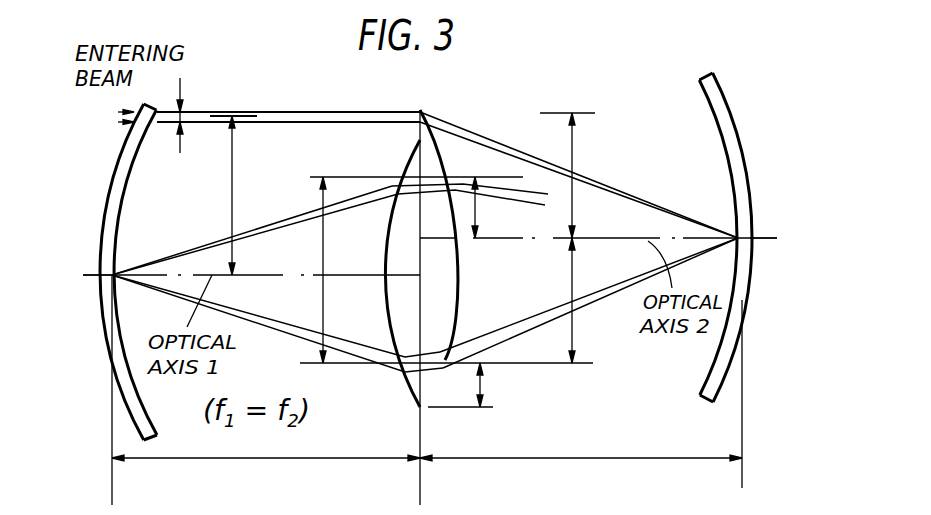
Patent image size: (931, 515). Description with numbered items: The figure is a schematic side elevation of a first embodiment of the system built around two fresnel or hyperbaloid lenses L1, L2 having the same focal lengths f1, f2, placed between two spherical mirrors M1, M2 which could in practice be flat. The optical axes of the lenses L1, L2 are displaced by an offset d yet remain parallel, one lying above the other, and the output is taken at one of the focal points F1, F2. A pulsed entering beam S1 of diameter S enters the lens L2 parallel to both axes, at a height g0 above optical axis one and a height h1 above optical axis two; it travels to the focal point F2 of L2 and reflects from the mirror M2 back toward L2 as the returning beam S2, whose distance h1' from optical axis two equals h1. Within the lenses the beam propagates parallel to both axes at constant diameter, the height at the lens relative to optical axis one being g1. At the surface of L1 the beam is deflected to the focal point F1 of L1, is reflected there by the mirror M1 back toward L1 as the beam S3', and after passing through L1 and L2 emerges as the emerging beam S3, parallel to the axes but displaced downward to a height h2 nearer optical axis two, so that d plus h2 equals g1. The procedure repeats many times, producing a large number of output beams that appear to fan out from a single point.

The spherical mirror M1 is at (116, 272).
The spherical mirror M2 is at (740, 237).
The fresnel lens L1 is at (413, 380).
The fresnel lens L2 is at (445, 360).
The focal point of L1 F1 is at (84, 280).
The focal point of L2 F2 is at (775, 248).
The beam diameter S is at (186, 113).
The pulsed entering beam S1 is at (97, 97).
The second beam pass S2 is at (468, 348).
The emerging beam S3 is at (470, 164).
The beam returning from F1 S3' is at (255, 205).
The height of entering beam above optical axis 1 g0 is at (244, 195).
The beam height relative to optical axis 1 g1 is at (337, 270).
The distance of s1 to optical axis 2 h1 is at (585, 175).
The distance of s2 to optical axis 2 h1' is at (587, 300).
The distance of s3 to optical axis 2 h2 is at (491, 207).
The displacement between optical axes d is at (490, 385).
The focal length of L1 f1 is at (266, 480).
The focal length of L2 f2 is at (581, 480).